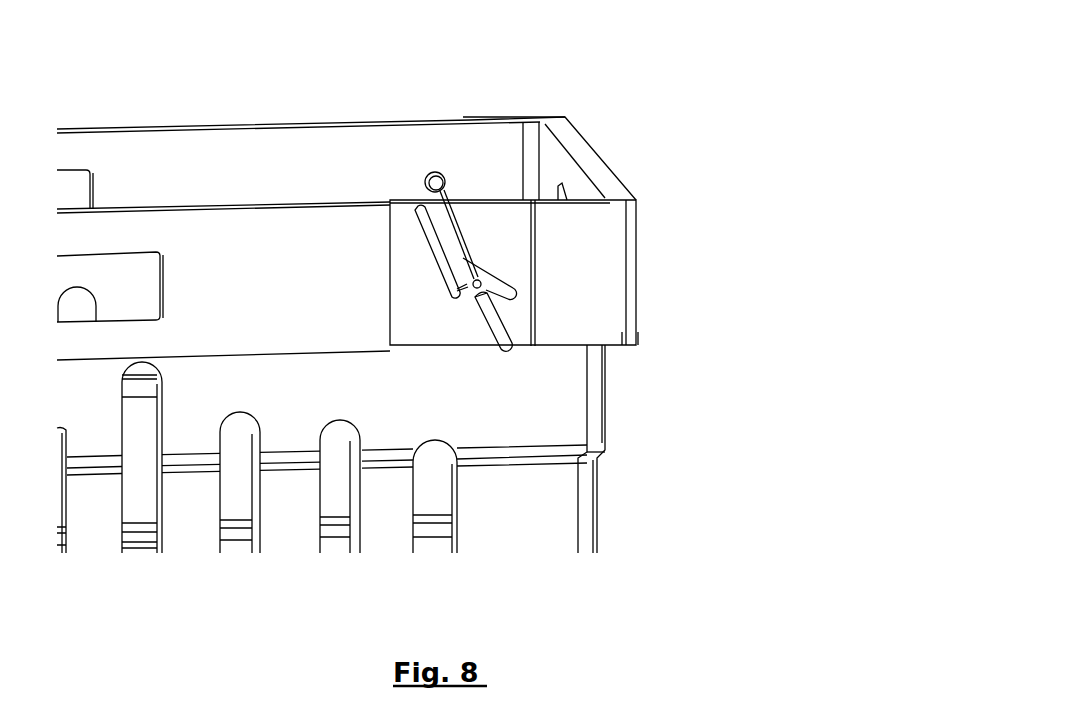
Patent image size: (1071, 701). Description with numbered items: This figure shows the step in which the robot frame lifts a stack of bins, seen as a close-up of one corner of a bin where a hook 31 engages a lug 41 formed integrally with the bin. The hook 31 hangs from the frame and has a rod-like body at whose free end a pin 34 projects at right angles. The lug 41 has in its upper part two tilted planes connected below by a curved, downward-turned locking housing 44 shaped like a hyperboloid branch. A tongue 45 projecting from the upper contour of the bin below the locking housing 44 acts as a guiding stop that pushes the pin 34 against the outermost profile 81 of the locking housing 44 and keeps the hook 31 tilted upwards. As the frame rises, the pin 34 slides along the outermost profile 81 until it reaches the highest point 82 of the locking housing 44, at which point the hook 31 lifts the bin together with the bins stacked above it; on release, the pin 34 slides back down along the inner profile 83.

The hook 31 is at (468, 222).
The pin 34 is at (507, 284).
The lug 41 is at (418, 207).
The locking housing 44 is at (468, 292).
The tongue 45 is at (503, 341).
The outermost profile 81 is at (488, 300).
The highest point 82 is at (464, 288).
The inner profile 83 is at (468, 287).